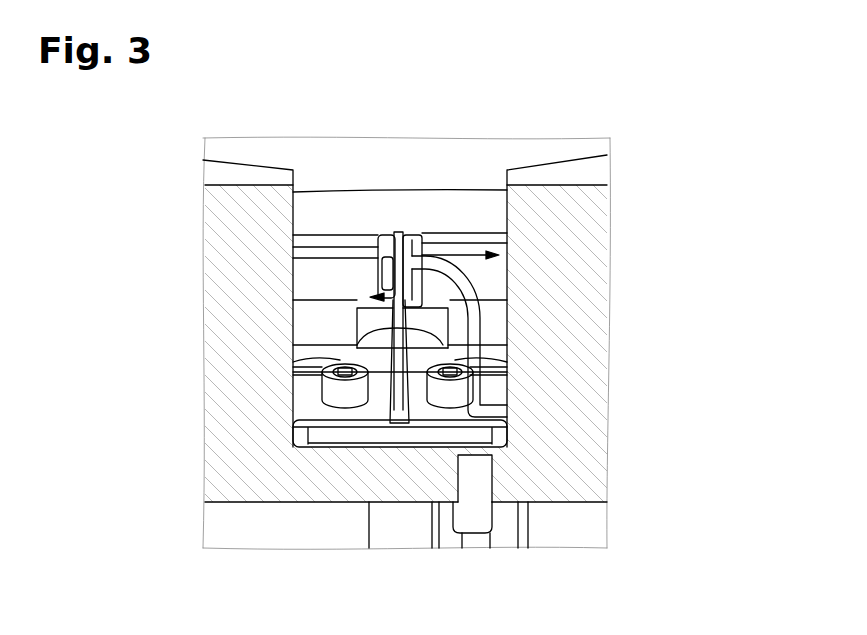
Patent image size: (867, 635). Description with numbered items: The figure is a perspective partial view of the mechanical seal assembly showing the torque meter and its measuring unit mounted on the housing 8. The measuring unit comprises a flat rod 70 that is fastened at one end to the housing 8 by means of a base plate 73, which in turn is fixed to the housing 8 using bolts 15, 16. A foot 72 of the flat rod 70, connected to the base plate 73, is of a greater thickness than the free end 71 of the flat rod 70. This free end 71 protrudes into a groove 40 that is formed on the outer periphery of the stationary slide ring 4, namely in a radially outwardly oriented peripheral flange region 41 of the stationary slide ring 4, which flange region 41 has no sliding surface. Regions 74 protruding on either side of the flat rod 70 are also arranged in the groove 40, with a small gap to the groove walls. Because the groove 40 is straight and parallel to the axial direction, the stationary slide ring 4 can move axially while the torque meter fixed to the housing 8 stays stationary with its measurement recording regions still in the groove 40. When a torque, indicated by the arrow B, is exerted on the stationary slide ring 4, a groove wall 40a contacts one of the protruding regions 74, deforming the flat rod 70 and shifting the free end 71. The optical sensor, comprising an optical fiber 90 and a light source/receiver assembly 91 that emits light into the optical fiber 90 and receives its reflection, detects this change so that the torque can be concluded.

The stationary slide ring 4 is at (486, 180).
The housing 8 is at (563, 387).
The bolt 15 is at (338, 393).
The bolt 16 is at (445, 395).
The groove 40 is at (427, 215).
The groove wall 40a is at (300, 246).
The flange region 41 is at (488, 282).
The arrow B is at (467, 250).
The flat rod 70 is at (377, 293).
The free end 71 is at (396, 232).
The foot 72 is at (398, 410).
The base plate 73 is at (352, 418).
The protruding regions 74 is at (417, 250).
The optical fiber 90 is at (477, 333).
The light source/receiver assembly 91 is at (473, 477).